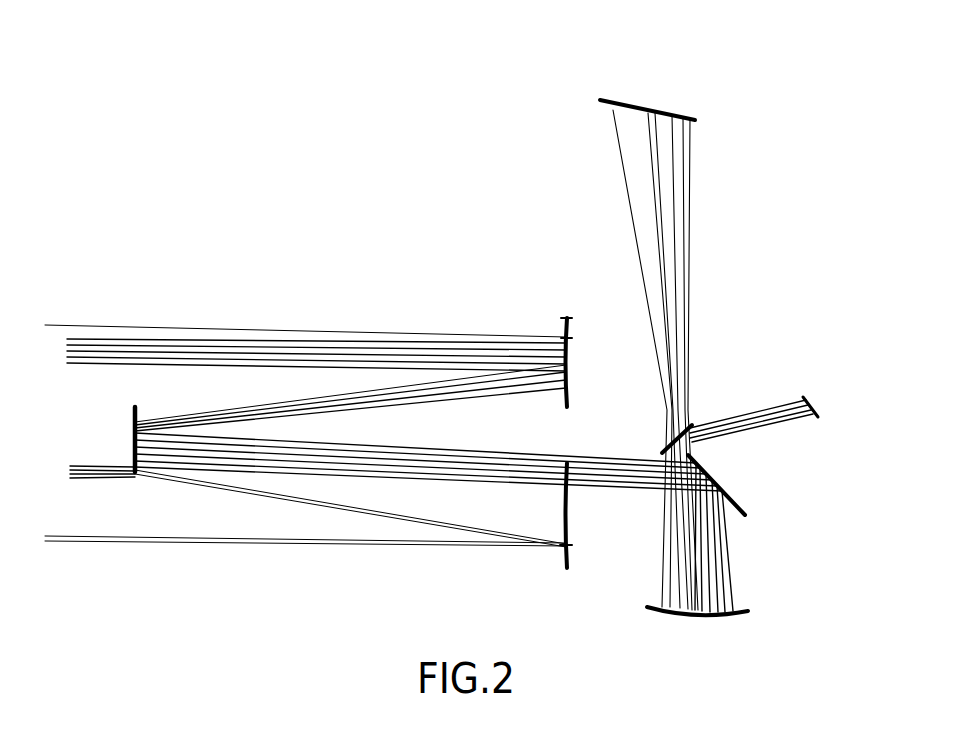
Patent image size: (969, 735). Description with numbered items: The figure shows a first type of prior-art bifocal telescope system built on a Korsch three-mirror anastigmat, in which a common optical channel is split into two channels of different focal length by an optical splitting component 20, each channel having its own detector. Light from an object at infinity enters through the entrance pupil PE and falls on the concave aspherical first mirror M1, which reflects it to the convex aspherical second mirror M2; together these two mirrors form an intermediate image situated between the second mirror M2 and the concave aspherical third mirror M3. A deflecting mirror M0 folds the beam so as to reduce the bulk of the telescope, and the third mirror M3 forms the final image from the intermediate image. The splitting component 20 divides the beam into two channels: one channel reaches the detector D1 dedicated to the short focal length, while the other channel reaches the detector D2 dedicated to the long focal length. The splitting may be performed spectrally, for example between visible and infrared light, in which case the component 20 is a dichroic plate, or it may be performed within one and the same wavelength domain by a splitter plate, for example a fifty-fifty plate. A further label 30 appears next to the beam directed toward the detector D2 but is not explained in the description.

The first mirror M1 is at (570, 383).
The second mirror M2 is at (131, 447).
The third mirror M3 is at (720, 618).
The deflecting mirror M0 is at (738, 505).
The entrance pupil PE is at (565, 317).
The splitting component 20 is at (662, 455).
The beam 30 is at (730, 432).
The detector D1 is at (642, 105).
The detector D2 is at (808, 400).